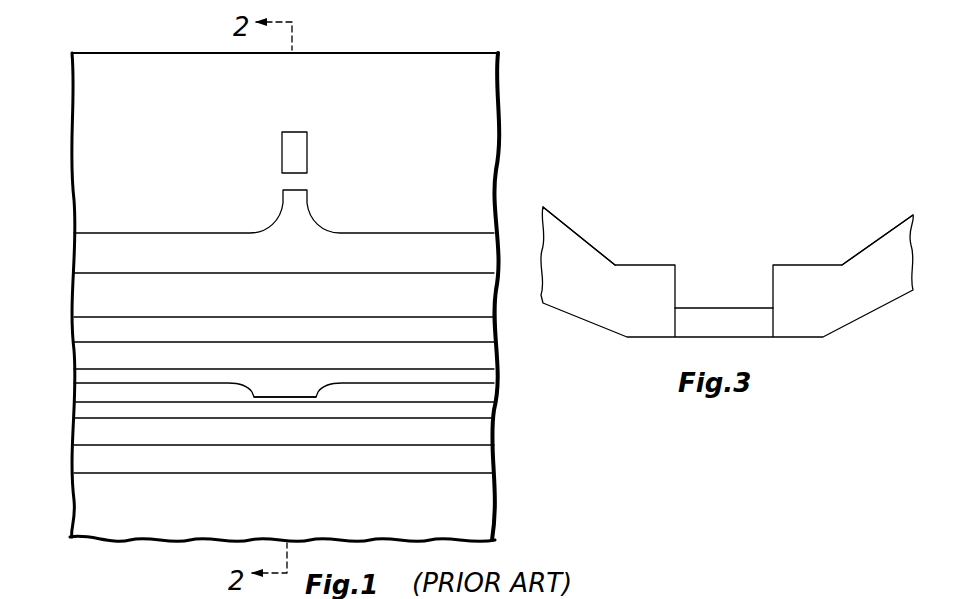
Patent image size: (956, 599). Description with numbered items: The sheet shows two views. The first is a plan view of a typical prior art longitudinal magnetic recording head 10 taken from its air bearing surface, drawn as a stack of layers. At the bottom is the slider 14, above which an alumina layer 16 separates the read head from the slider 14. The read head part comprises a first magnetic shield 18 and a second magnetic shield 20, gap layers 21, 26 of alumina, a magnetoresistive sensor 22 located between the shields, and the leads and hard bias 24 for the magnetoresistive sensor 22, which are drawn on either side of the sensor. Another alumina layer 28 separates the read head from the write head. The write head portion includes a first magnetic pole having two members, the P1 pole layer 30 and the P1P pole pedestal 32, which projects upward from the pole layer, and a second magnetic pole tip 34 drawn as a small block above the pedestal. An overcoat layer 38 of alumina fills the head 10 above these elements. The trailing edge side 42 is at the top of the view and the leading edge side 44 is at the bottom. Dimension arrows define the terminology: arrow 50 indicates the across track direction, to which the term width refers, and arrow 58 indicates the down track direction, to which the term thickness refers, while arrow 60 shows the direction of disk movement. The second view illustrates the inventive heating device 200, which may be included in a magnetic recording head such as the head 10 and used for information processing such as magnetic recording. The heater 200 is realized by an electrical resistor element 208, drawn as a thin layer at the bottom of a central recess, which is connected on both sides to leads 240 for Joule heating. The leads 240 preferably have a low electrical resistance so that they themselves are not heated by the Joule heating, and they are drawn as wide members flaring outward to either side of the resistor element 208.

In FIG. 1, the magnetic recording head 10 is at (64, 184).
In FIG. 1, the slider 14 is at (158, 514).
In FIG. 1, the alumina layer 16 is at (237, 458).
In FIG. 1, the magnetic shield S1 18 is at (355, 433).
In FIG. 1, the magnetic shield S2 20 is at (375, 350).
In FIG. 1, the gap layer 21 is at (70, 418).
In FIG. 1, the magnetoresistive sensor 22 is at (292, 399).
In FIG. 1, the leads and hard bias 24 is at (74, 395).
In FIG. 1, the gap layer 26 is at (272, 376).
In FIG. 1, the alumina layer 28 is at (228, 330).
In FIG. 1, the P1 pole layer 30 is at (185, 310).
In FIG. 1, the P1P pole pedestal 32 is at (292, 222).
In FIG. 1, the second magnetic pole tip P2 34 is at (306, 164).
In FIG. 1, the overcoat layer 38 is at (437, 108).
In FIG. 1, the trailing edge side 42 is at (326, 52).
In FIG. 1, the leading edge side 44 is at (186, 548).
In FIG. 1, the across track direction arrow 50 is at (499, 36).
In FIG. 1, the down track direction arrow 58 is at (511, 82).
In FIG. 1, the direction of disk movement arrow 60 is at (58, 244).
In FIG. 3, the heating device 200 is at (690, 278).
In FIG. 3, the electrical resistor element 208 is at (702, 320).
In FIG. 3, the leads 240 is at (585, 266).